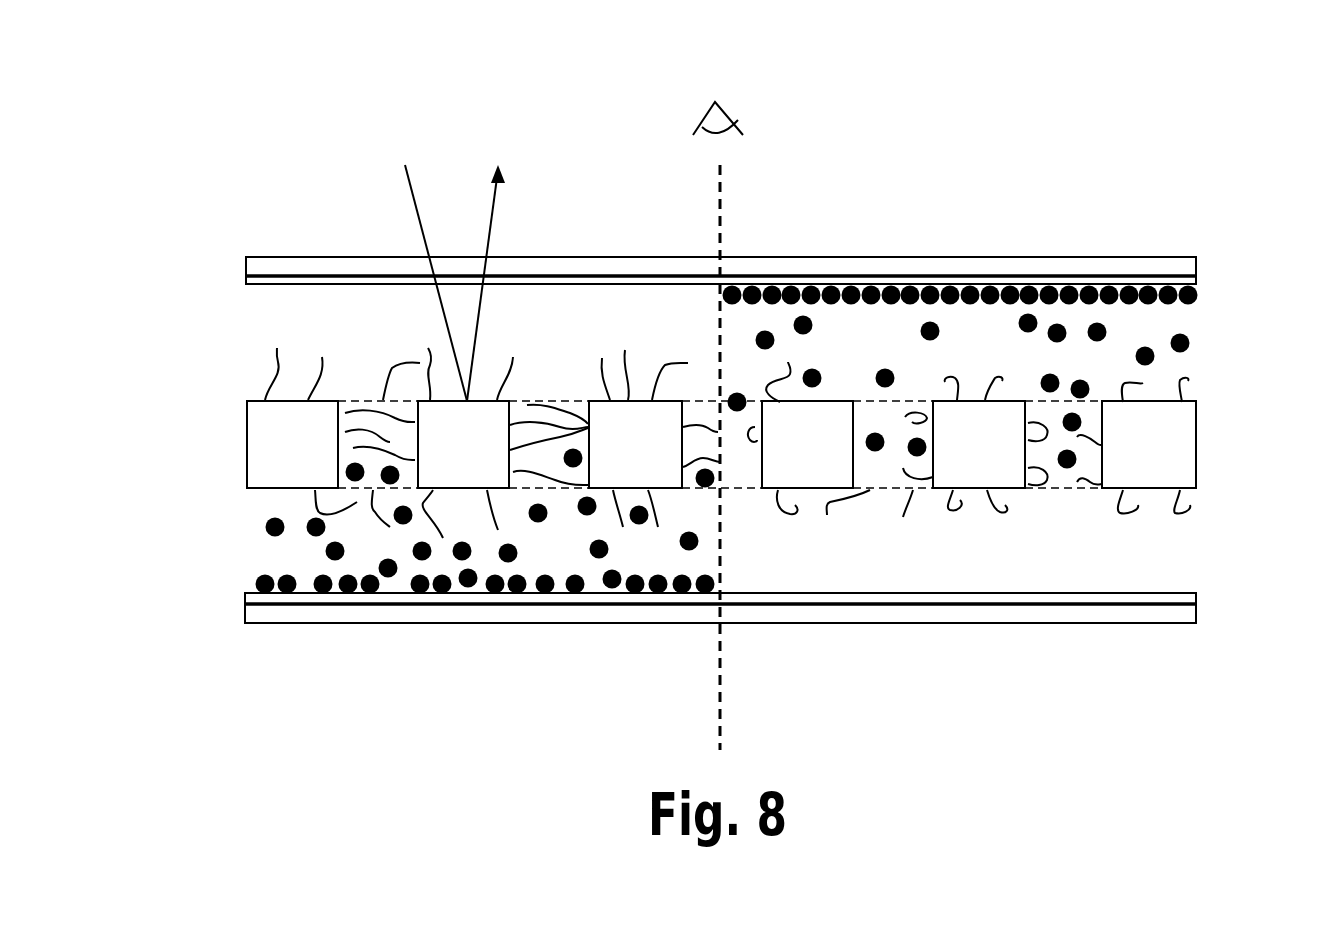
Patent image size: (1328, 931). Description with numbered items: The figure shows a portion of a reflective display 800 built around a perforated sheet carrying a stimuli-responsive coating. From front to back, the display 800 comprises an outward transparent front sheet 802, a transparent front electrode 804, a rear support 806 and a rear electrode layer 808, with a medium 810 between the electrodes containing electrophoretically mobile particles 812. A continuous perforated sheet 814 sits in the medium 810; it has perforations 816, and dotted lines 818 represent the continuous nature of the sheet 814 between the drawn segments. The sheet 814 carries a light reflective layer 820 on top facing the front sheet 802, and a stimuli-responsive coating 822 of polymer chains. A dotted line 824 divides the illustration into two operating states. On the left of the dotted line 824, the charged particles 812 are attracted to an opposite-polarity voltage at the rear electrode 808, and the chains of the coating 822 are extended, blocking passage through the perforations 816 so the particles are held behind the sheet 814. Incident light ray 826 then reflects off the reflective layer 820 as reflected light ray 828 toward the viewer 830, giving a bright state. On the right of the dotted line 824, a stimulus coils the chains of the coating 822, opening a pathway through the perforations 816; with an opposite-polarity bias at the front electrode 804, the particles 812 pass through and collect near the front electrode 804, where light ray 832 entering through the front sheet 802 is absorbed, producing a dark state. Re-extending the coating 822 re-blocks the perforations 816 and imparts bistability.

The display 800 is at (1088, 215).
The outward transparent front sheet 802 is at (288, 258).
The transparent front electrode 804 is at (282, 284).
The rear support 806 is at (927, 623).
The rear electrode layer 808 is at (1167, 593).
The medium 810 is at (385, 336).
The electrophoretically mobile particles 812 is at (287, 580).
The continuous perforated sheet 814 is at (320, 464).
The perforations 816 is at (872, 423).
The dotted lines 818 is at (915, 490).
The light reflective layer 820 is at (267, 401).
The stimuli-responsive coating 822 is at (683, 358).
The dotted line 824 is at (722, 230).
The light ray 826 is at (415, 215).
The reflected light ray 828 is at (493, 240).
The viewer 830 is at (738, 120).
The light ray 832 is at (966, 278).